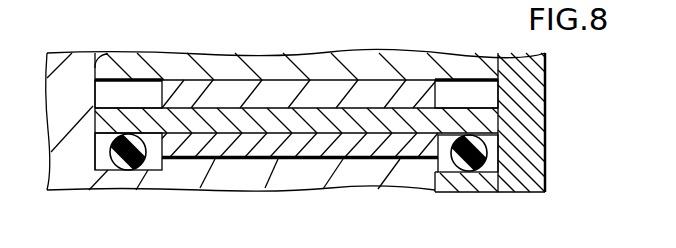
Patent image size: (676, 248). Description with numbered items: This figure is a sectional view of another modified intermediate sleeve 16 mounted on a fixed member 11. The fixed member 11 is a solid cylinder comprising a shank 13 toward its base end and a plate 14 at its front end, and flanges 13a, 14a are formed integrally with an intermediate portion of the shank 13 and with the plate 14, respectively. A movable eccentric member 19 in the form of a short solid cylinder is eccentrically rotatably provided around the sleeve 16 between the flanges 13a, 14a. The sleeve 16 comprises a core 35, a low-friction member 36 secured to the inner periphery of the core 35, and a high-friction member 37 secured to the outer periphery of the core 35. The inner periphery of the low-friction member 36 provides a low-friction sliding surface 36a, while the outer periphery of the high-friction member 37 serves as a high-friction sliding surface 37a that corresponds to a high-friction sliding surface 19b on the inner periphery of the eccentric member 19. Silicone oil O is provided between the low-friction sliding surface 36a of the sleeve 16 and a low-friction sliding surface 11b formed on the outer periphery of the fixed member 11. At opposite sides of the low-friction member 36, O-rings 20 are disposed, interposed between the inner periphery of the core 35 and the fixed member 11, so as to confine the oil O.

The fixed member 11 is at (58, 138).
The low-friction sliding surface 11b is at (234, 118).
The shank 13 is at (57, 91).
The flange 13a is at (107, 66).
The plate 14 is at (530, 154).
The flange 14a is at (544, 96).
The sleeve 16 is at (308, 118).
The movable eccentric member 19 is at (473, 67).
The high-friction sliding surface 19b is at (377, 80).
The O-ring 20 is at (128, 163).
The core 35 is at (134, 118).
The low-friction member 36 is at (175, 147).
The low-friction sliding surface 36a is at (263, 162).
The high-friction member 37 is at (417, 88).
The high-friction sliding surface 37a is at (352, 78).
The silicone oil O is at (201, 160).